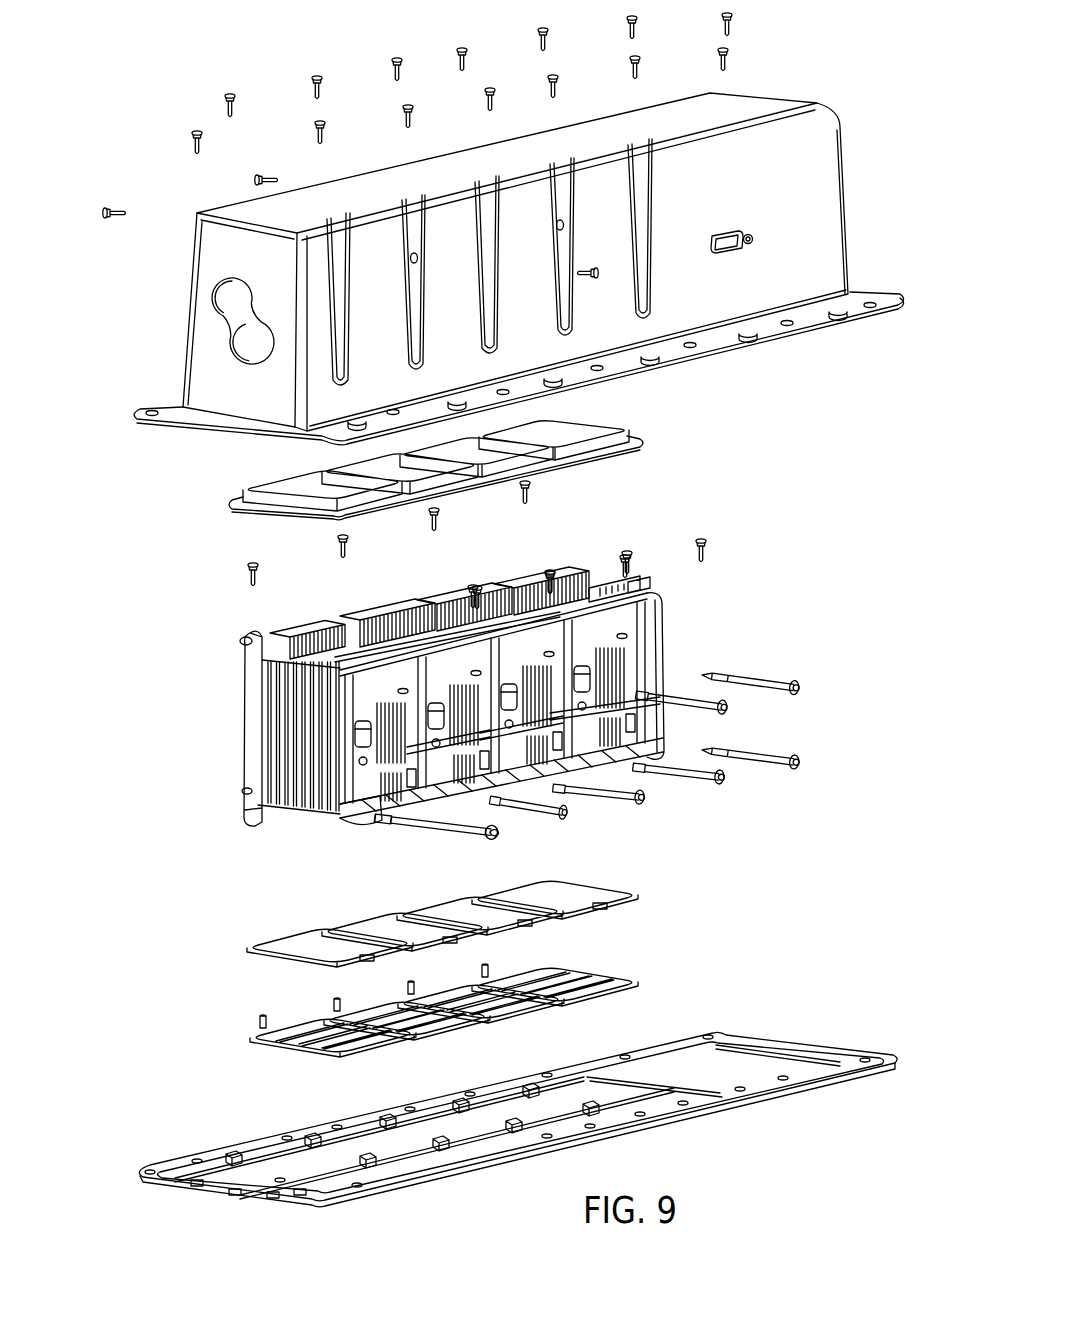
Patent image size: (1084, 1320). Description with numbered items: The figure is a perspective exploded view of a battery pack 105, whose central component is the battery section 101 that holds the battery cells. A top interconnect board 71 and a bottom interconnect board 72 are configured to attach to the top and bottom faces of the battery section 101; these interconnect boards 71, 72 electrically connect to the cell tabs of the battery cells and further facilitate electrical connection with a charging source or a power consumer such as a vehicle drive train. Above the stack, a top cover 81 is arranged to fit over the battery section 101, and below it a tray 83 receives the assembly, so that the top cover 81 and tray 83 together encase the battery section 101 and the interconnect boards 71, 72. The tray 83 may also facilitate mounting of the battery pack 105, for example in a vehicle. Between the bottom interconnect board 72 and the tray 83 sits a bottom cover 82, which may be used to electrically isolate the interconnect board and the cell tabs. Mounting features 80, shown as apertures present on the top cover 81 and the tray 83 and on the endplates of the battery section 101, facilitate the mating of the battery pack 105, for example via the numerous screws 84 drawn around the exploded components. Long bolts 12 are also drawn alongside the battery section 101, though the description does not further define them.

The battery pack 105 is at (832, 70).
The top cover 81 is at (822, 212).
The mounting features 80 is at (790, 325).
The screws 84 is at (395, 57).
The top interconnect board 71 is at (617, 431).
The battery section 101 is at (714, 585).
The bolts 12 is at (692, 782).
The bottom interconnect board 72 is at (610, 893).
The bottom cover 82 is at (610, 986).
The tray 83 is at (783, 1062).